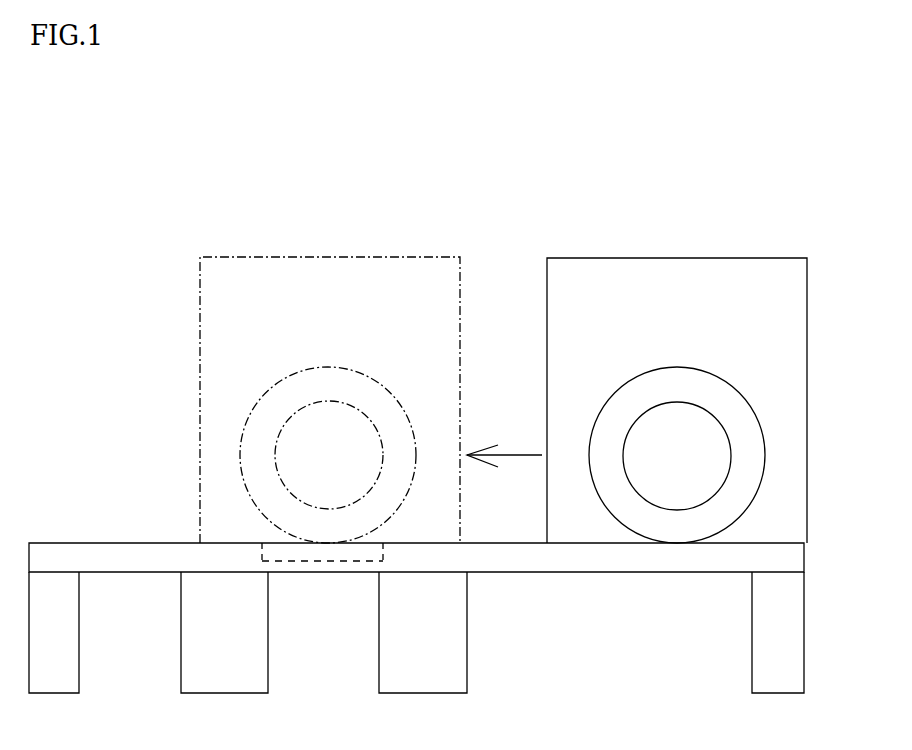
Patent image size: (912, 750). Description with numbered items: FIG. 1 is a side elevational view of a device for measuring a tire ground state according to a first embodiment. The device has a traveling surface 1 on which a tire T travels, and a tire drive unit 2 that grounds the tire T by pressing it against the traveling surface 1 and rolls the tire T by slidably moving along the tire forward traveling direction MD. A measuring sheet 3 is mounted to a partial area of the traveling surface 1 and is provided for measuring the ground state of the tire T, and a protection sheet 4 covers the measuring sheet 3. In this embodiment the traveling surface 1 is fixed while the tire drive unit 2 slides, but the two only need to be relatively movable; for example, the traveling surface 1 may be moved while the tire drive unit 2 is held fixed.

The traveling surface 1 is at (168, 542).
The tire drive unit 2 is at (742, 257).
The measuring sheet 3 is at (322, 583).
The protection sheet 4 is at (340, 563).
The tire T is at (744, 397).
The tire forward traveling direction MD is at (504, 468).